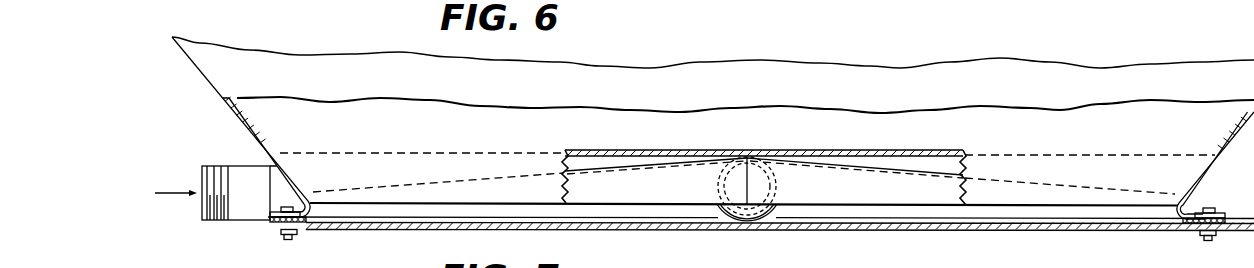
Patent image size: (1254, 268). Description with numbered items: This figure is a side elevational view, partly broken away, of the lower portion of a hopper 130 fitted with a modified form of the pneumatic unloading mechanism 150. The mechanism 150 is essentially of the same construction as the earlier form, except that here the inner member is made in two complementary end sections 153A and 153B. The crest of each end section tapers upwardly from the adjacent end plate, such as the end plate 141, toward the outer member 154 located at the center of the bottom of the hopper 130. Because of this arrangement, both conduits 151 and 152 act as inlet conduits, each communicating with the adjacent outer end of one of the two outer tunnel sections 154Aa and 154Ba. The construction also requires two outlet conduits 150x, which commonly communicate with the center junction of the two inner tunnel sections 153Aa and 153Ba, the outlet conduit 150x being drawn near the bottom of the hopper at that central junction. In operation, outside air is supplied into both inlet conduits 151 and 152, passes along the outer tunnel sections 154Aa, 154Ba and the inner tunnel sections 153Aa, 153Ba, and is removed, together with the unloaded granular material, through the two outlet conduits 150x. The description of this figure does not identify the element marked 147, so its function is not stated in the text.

The hopper 130 is at (974, 51).
The end plate 141 is at (260, 145).
The base plate 147 is at (1040, 231).
The pneumatic unloading mechanism 150 is at (892, 233).
The outlet conduit 150x is at (769, 225).
The inlet conduit 151 is at (268, 192).
The inlet conduit 152 is at (1242, 192).
The inner member end section 153A is at (688, 198).
The inner tunnel section 153Aa is at (628, 207).
The inner member end section 153B is at (817, 199).
The inner tunnel section 153Ba is at (851, 209).
The outer member 154 is at (453, 156).
The outer tunnel section 154Aa is at (586, 164).
The outer tunnel section 154Ba is at (909, 164).